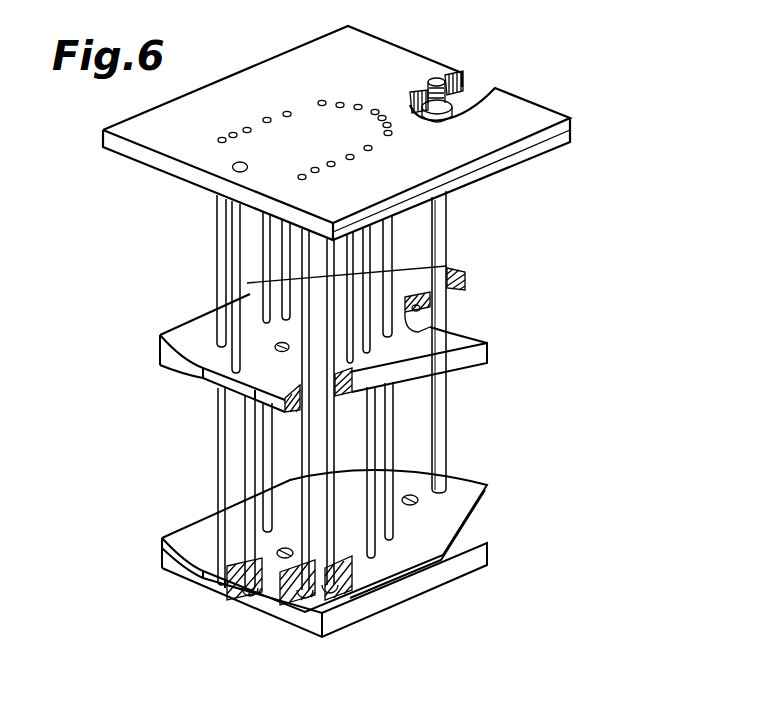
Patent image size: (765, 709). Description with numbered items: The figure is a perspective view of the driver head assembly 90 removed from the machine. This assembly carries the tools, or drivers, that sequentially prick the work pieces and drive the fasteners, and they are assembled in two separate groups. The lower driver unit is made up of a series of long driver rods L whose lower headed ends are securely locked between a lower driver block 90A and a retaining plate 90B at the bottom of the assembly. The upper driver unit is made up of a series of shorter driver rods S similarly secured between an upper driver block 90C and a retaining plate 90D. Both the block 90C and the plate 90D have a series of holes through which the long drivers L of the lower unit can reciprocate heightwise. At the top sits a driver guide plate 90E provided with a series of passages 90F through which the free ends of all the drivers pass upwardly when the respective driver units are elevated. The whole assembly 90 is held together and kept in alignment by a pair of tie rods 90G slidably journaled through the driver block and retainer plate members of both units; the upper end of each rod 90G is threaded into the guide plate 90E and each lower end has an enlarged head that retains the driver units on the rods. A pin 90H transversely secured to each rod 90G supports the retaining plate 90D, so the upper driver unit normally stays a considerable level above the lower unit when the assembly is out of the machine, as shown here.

The driver head assembly 90 is at (508, 317).
The lower driver block 90A is at (478, 508).
The retaining plate 90B is at (362, 610).
The upper driver block 90C is at (455, 270).
The retaining plate 90D is at (490, 348).
The driver guide plate 90E is at (553, 147).
The passages 90F is at (286, 112).
The tie rods 90G is at (242, 445).
The pin 90H is at (425, 310).
The driver rods S is at (393, 254).
The driver rods L is at (205, 547).